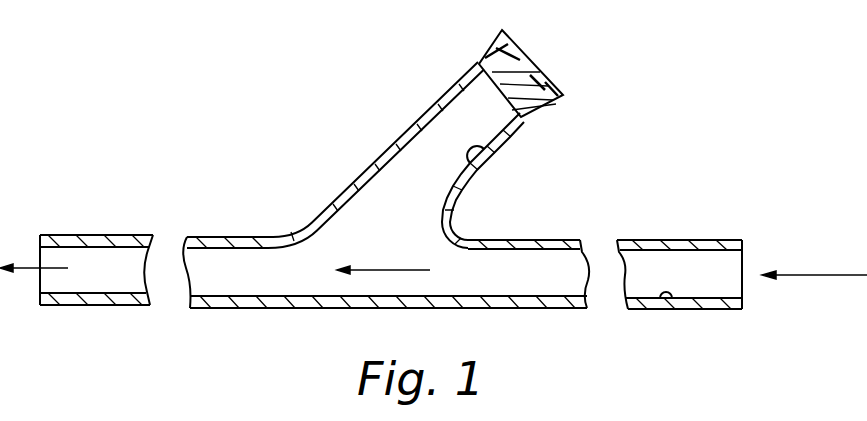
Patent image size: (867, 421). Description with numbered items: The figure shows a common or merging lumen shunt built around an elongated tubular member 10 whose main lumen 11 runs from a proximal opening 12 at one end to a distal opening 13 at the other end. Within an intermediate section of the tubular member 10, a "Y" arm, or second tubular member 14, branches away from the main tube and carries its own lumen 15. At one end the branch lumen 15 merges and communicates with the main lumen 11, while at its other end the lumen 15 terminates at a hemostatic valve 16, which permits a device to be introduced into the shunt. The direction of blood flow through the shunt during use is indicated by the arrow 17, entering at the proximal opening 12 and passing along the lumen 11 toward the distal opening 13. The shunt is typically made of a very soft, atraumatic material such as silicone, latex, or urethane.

The elongated tubular member 10 is at (648, 238).
The lumen 11 is at (675, 306).
The proximal opening 12 is at (733, 265).
The distal opening 13 is at (50, 256).
The second tubular member 14 is at (400, 138).
The lumen 15 is at (490, 154).
The hemostatic valve 16 is at (513, 42).
The arrow 17 is at (819, 277).